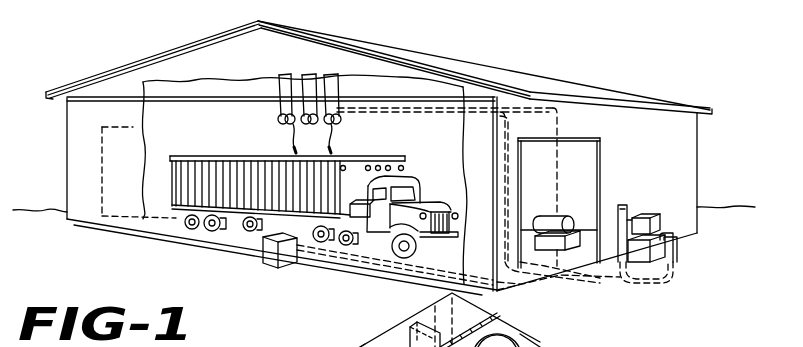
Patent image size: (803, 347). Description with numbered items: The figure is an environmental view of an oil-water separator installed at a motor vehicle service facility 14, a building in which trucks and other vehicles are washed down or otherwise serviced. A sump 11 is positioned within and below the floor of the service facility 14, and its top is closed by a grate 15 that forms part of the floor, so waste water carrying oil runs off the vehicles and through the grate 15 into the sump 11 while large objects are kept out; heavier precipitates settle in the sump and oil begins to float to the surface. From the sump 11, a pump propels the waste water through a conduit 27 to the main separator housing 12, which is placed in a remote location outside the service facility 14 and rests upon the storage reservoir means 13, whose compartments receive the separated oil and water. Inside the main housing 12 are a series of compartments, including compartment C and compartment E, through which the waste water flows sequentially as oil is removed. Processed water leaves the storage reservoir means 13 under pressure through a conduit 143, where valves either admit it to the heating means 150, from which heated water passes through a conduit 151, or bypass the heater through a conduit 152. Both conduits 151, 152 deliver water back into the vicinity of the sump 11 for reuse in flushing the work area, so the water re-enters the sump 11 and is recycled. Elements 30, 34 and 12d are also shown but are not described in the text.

The motor vehicle service facility 14 is at (115, 66).
The conduit 152 is at (289, 137).
The conduit 151 is at (329, 139).
The heating means 150 is at (566, 216).
The main separator housing 12 is at (661, 213).
The storage reservoir means 13 is at (670, 229).
The grate 15 is at (272, 232).
The sump 11 is at (265, 264).
The conduit 27 is at (578, 286).
The conduit 143 is at (643, 282).
The lower structure 30 is at (332, 346).
The compartment C is at (382, 346).
The compartment E is at (432, 306).
The rail 34 is at (512, 331).
The wheel element 12d is at (576, 329).